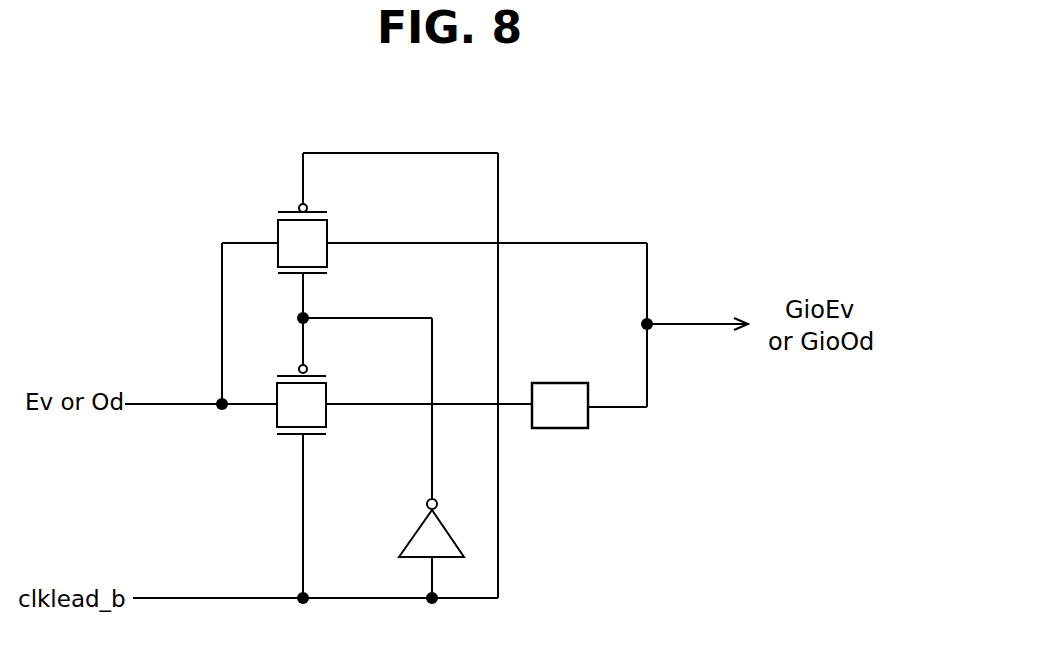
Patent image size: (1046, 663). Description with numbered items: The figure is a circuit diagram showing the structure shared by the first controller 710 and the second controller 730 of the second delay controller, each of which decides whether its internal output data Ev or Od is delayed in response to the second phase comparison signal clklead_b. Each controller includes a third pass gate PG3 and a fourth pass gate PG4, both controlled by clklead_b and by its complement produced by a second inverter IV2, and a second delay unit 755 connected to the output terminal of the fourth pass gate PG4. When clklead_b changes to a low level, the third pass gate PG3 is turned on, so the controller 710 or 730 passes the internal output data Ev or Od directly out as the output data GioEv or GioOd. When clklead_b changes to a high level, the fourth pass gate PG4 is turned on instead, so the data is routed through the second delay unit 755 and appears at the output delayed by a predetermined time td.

The first controller 710 is at (877, 140).
The second controller 730 is at (436, 378).
The second delay unit 755 is at (560, 383).
The third pass gate PG3 is at (327, 220).
The fourth pass gate PG4 is at (326, 383).
The second inverter IV2 is at (413, 528).